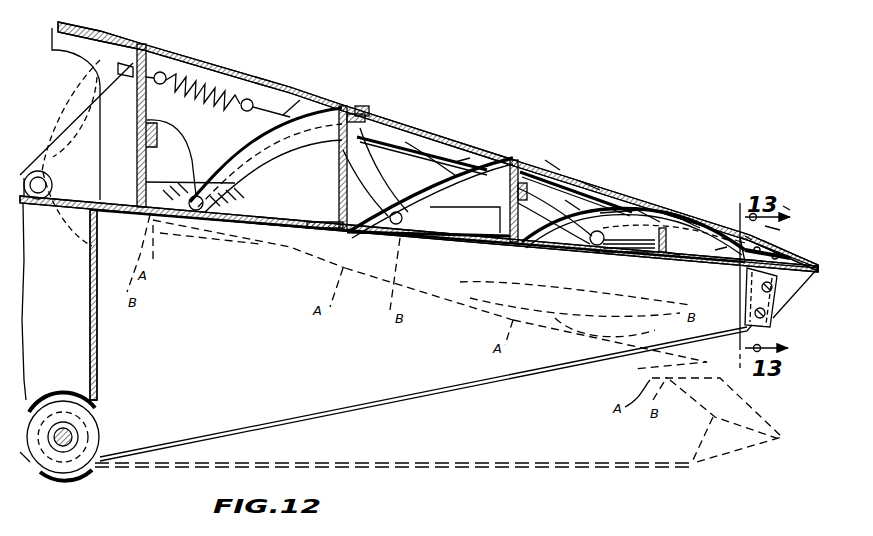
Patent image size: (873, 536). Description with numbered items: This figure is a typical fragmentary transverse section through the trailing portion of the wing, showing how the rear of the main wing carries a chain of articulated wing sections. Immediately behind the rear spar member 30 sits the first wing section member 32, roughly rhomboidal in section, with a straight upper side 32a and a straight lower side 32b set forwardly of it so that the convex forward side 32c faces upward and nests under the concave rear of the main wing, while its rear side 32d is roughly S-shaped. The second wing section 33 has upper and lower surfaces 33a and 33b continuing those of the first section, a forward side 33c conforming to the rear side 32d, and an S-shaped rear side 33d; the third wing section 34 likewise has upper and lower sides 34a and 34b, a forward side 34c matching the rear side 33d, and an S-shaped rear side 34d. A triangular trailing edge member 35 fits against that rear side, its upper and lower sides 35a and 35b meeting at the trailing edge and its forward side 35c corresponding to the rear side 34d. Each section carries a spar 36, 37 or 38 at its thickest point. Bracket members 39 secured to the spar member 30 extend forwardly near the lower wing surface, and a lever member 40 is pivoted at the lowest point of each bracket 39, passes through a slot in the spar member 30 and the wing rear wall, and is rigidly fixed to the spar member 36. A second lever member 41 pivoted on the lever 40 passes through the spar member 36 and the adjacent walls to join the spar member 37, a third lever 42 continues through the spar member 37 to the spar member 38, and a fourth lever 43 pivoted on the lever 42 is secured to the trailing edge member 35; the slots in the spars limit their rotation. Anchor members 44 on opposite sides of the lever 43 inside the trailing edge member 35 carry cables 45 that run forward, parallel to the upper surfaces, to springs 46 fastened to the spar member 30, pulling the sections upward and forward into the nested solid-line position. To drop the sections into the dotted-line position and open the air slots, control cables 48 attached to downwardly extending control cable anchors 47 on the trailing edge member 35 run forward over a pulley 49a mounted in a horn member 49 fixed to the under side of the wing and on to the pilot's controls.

The rear wing spar member 30 is at (148, 47).
The first wing section member 32 is at (284, 182).
The upper side of first wing section 32a is at (407, 145).
The lower side of first wing section 32b is at (244, 200).
The forward side of first wing section 32c is at (285, 113).
The rear side of first wing section 32d is at (457, 165).
The second wing section 33 is at (540, 203).
The upper exposed surface of second wing section 33a is at (565, 200).
The lower exposed surface of second wing section 33b is at (465, 237).
The forward side of second wing section 33c is at (545, 160).
The rear side of second wing section 33d is at (600, 213).
The third wing section 34 is at (670, 213).
The upper exposed side of third wing section 34a is at (683, 220).
The lower exposed side of third wing section 34b is at (593, 253).
The forward side of third wing section 34c is at (637, 210).
The rear side of third wing section 34d is at (670, 250).
The trailing edge member 35 is at (773, 247).
The upper side of trailing edge member 35a is at (773, 227).
The lower side of trailing edge member 35b is at (727, 247).
The forward side of trailing edge member 35c is at (740, 240).
The wing section spar member 36 is at (362, 106).
The wing section spar member 37 is at (545, 170).
The wing section spar member 38 is at (673, 213).
The bracket member 39 is at (100, 120).
The lever member 40 is at (93, 247).
The second lever member 41 is at (377, 185).
The third lever 42 is at (577, 180).
The fourth lever 43 is at (748, 238).
The anchor member 44 is at (787, 207).
The cable 45 is at (457, 162).
The spring 46 is at (232, 95).
The control cable anchor 47 is at (793, 303).
The control cable 48 is at (480, 383).
The horn member 49 is at (93, 320).
The pulley 49a is at (93, 437).